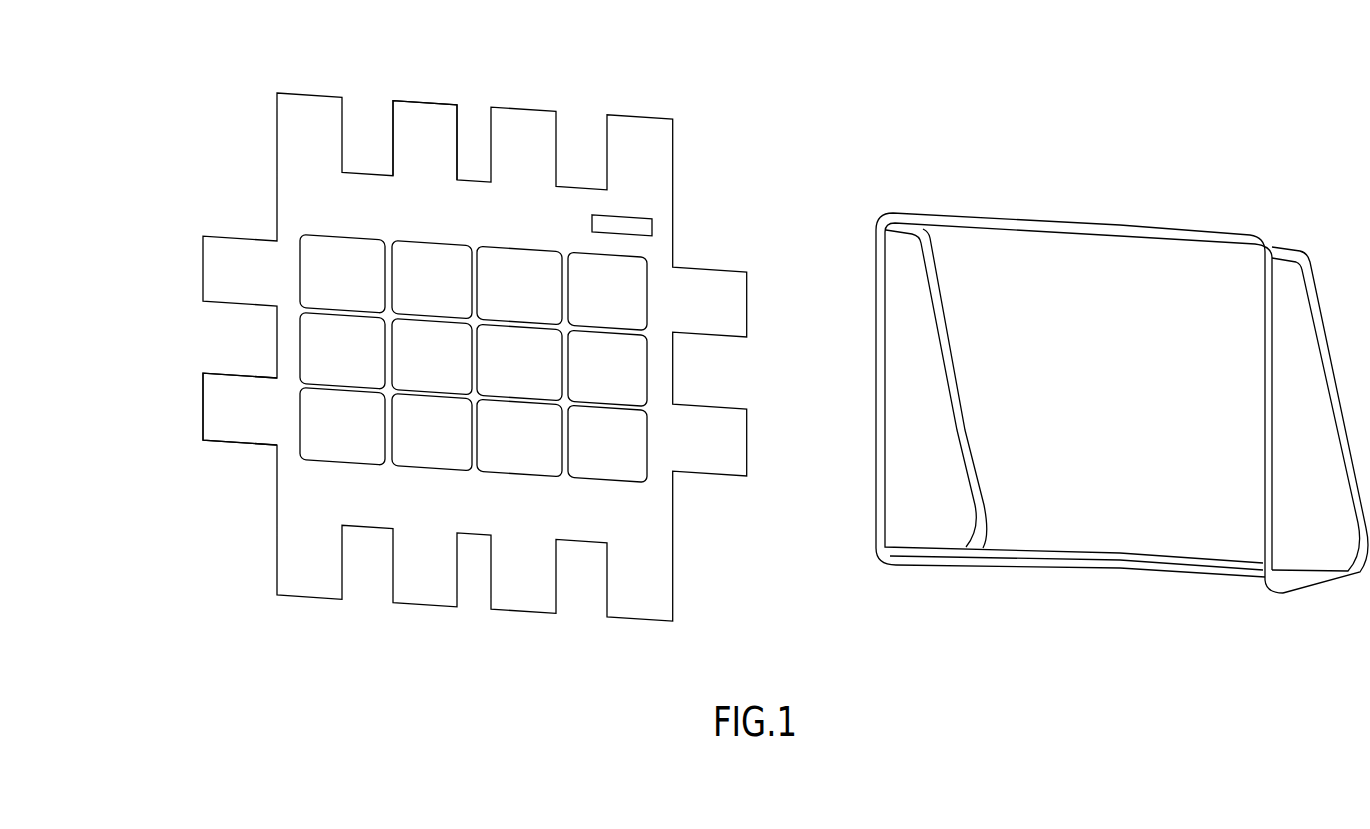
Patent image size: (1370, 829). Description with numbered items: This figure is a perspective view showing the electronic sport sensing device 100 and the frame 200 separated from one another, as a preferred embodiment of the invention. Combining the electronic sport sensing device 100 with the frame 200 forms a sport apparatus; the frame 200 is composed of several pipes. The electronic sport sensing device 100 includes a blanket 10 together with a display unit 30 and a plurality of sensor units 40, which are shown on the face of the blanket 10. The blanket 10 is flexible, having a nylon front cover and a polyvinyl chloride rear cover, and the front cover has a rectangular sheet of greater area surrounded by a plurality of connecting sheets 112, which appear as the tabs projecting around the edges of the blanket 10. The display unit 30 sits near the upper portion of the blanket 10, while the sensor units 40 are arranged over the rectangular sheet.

The electronic sport sensing device 100 is at (277, 167).
The blanket 10 is at (306, 490).
The connecting sheets 112 is at (417, 125).
The display unit 30 is at (627, 215).
The sensor units 40 is at (315, 350).
The frame 200 is at (1187, 228).